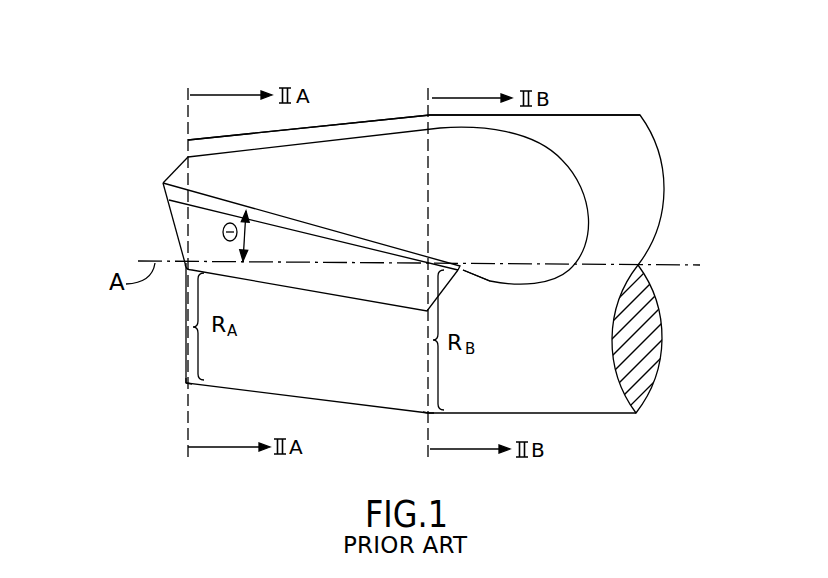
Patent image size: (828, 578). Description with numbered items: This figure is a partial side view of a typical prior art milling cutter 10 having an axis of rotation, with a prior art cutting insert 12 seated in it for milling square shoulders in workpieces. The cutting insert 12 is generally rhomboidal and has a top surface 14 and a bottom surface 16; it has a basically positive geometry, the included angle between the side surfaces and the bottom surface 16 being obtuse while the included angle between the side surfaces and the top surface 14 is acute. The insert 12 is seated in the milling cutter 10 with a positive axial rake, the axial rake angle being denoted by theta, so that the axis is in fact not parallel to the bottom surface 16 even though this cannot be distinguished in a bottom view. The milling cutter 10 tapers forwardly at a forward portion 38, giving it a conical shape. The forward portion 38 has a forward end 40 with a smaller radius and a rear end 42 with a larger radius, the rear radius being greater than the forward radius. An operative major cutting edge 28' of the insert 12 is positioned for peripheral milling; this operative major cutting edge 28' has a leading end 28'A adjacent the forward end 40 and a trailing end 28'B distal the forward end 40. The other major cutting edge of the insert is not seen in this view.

The milling cutter 10 is at (604, 88).
The cutting insert 12 is at (207, 227).
The top surface 14 is at (321, 211).
The bottom surface 16 is at (315, 304).
The forward portion 38 is at (363, 98).
The forward end 40 is at (198, 398).
The rear end 42 is at (414, 419).
The operative major cutting edge 28' is at (388, 205).
The leading end 28'A is at (155, 143).
The trailing end 28'B is at (478, 232).